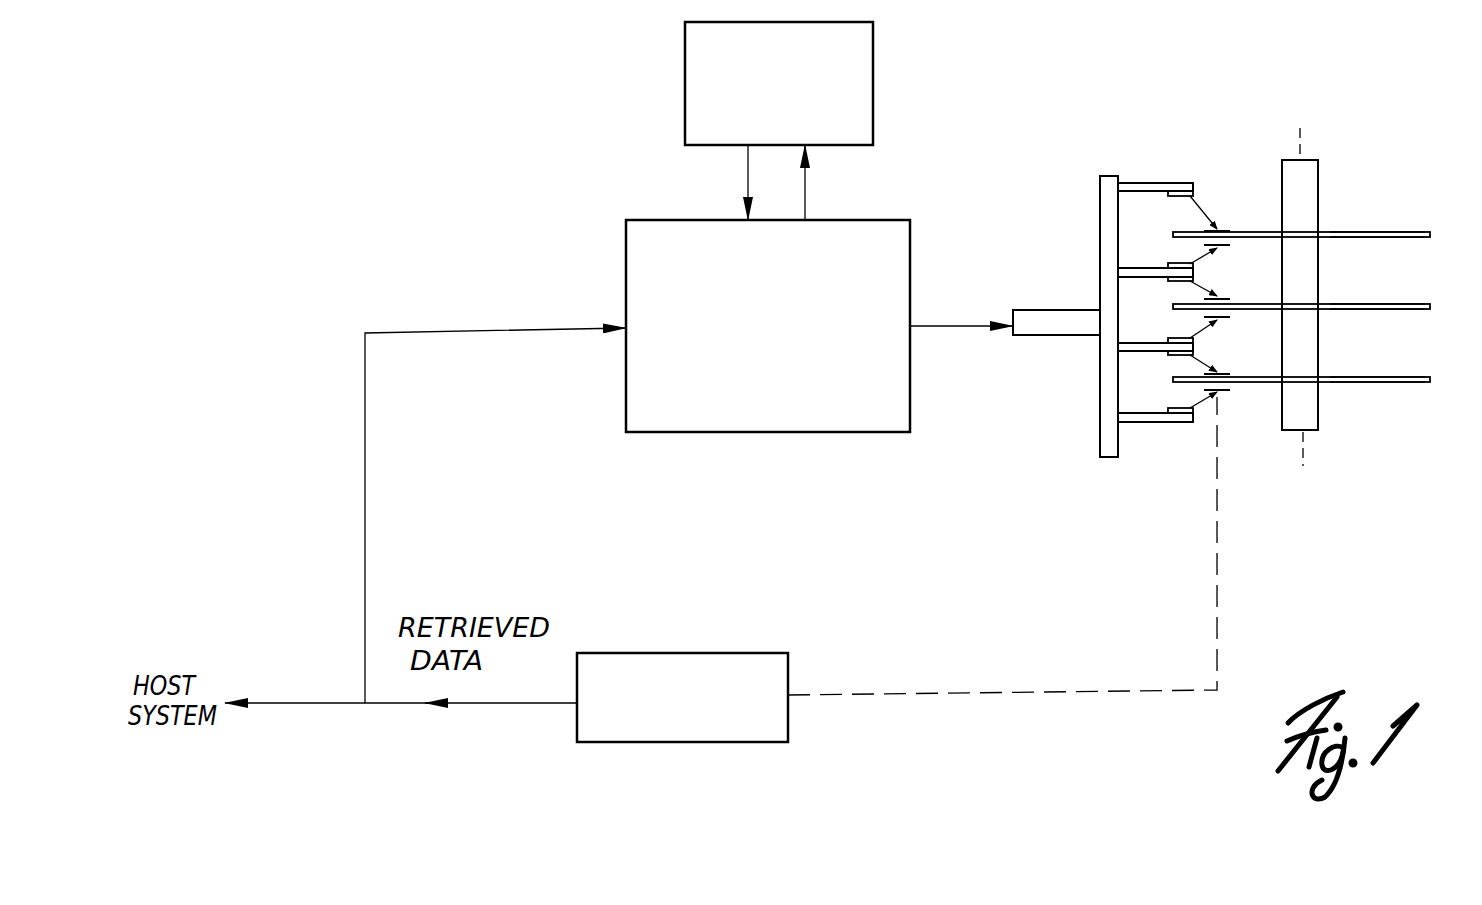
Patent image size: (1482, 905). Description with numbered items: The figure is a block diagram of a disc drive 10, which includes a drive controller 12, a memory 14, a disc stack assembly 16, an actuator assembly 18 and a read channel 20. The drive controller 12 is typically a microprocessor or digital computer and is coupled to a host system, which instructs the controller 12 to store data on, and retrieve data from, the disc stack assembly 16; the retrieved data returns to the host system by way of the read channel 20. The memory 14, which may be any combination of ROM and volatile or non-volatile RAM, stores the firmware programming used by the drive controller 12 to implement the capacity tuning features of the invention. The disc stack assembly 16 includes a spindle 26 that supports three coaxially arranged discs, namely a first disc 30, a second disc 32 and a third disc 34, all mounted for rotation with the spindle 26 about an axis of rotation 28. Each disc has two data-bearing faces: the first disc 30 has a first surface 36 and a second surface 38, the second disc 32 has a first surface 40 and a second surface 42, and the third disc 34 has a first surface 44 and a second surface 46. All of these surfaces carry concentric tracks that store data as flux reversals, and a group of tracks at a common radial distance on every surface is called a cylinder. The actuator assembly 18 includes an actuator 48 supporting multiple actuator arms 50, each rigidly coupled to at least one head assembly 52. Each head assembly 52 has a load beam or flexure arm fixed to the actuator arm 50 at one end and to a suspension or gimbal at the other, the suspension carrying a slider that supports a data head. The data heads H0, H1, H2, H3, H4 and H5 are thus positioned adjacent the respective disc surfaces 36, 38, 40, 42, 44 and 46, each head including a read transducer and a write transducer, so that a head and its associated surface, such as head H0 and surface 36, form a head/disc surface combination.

The disc drive 10 is at (399, 190).
The drive controller 12 is at (762, 433).
The memory 14 is at (873, 93).
The disc stack assembly 16 is at (1303, 160).
The actuator assembly 18 is at (1108, 176).
The read channel 20 is at (788, 718).
The spindle 26 is at (1318, 190).
The axis of rotation 28 is at (1305, 450).
The first disc 30 is at (1432, 232).
The second disc 32 is at (1432, 304).
The third disc 34 is at (1432, 378).
The first surface 36 is at (1378, 231).
The second surface 38 is at (1380, 238).
The first surface 40 is at (1358, 303).
The second surface 42 is at (1376, 310).
The first surface 44 is at (1394, 376).
The second surface 46 is at (1345, 384).
The actuator 48 is at (1098, 206).
The actuator arms 50 is at (1145, 183).
The head assembly 52 is at (1197, 192).
The data head H0 is at (1222, 229).
The data head H1 is at (1222, 247).
The data head H2 is at (1224, 298).
The data head H3 is at (1222, 319).
The data head H4 is at (1224, 373).
The data head H5 is at (1222, 392).